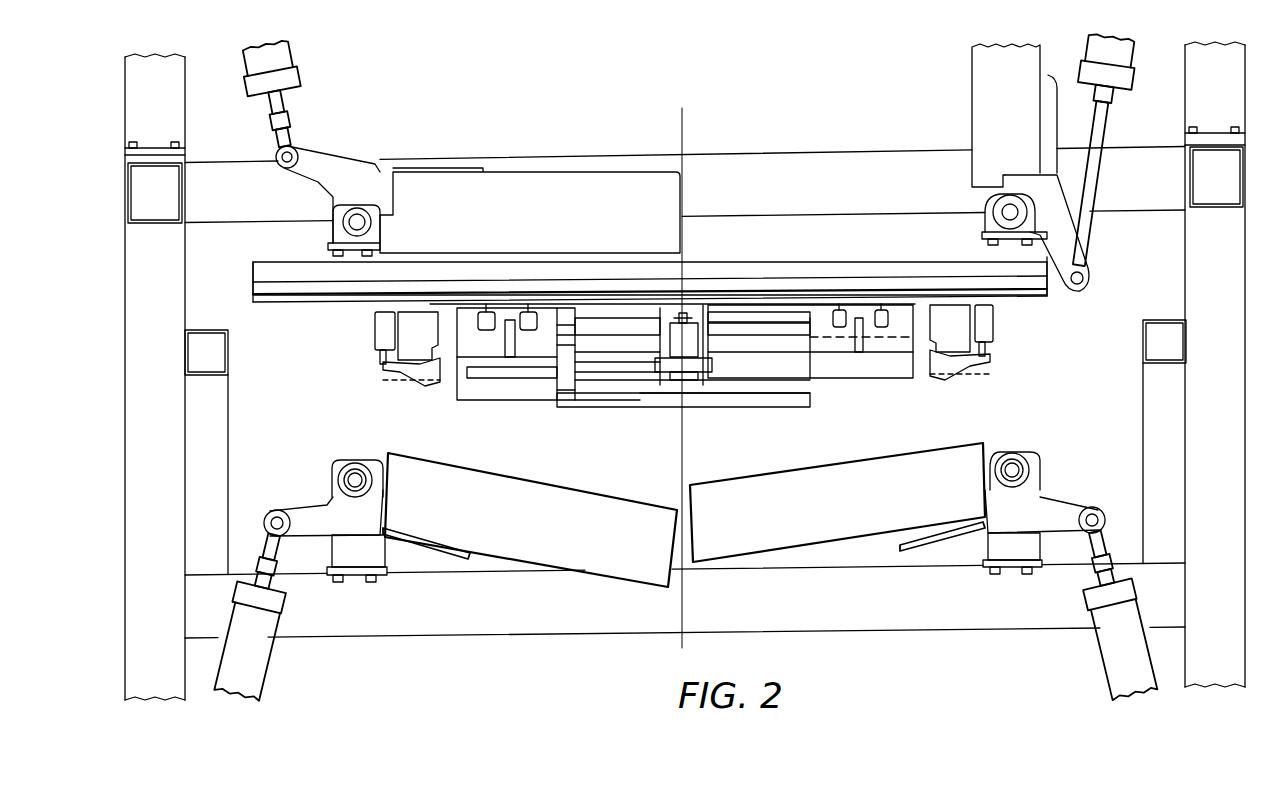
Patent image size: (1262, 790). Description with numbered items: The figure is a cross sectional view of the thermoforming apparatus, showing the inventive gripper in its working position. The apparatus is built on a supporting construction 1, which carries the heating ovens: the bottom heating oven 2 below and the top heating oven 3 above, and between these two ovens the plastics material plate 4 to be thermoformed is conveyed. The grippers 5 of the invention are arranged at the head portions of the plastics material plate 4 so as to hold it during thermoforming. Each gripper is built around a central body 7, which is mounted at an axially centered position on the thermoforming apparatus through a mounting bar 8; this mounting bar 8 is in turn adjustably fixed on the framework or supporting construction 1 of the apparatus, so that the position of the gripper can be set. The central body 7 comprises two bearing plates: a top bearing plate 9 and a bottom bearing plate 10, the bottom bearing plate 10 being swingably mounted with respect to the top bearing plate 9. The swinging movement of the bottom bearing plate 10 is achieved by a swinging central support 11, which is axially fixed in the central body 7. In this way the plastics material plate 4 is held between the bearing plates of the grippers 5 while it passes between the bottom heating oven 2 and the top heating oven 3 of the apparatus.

The supporting construction 1 is at (1140, 368).
The bottom heating oven 2 is at (540, 544).
The top heating oven 3 is at (510, 195).
The plastics material plate 4 is at (938, 385).
The grippers 5 is at (574, 416).
The central body 7 is at (667, 406).
The mounting bar 8 is at (618, 268).
The top bearing plate 9 is at (772, 343).
The bottom bearing plate 10 is at (766, 399).
The swinging central support 11 is at (717, 328).